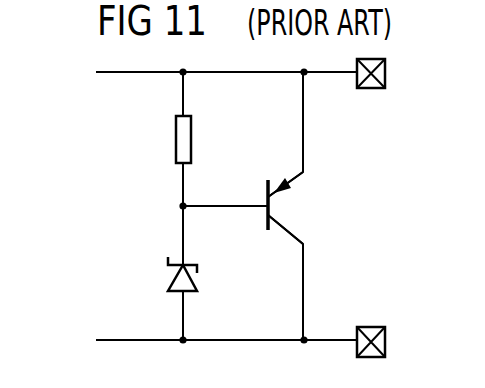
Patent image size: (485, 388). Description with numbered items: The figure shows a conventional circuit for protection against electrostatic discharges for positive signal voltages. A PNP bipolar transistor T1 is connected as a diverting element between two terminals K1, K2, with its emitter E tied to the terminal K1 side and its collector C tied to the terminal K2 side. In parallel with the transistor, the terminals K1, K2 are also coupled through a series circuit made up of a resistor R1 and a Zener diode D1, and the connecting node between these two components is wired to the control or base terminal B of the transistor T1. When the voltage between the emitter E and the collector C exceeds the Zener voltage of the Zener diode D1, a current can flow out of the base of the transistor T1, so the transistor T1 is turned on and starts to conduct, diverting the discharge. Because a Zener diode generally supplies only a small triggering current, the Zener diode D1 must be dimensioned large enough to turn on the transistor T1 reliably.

The resistor R1 is at (176, 138).
The Zener diode D1 is at (170, 280).
The PNP bipolar transistor T1 is at (273, 208).
The emitter E is at (285, 167).
The base terminal B is at (255, 201).
The collector C is at (285, 248).
The terminal K1 is at (370, 90).
The terminal K2 is at (370, 326).